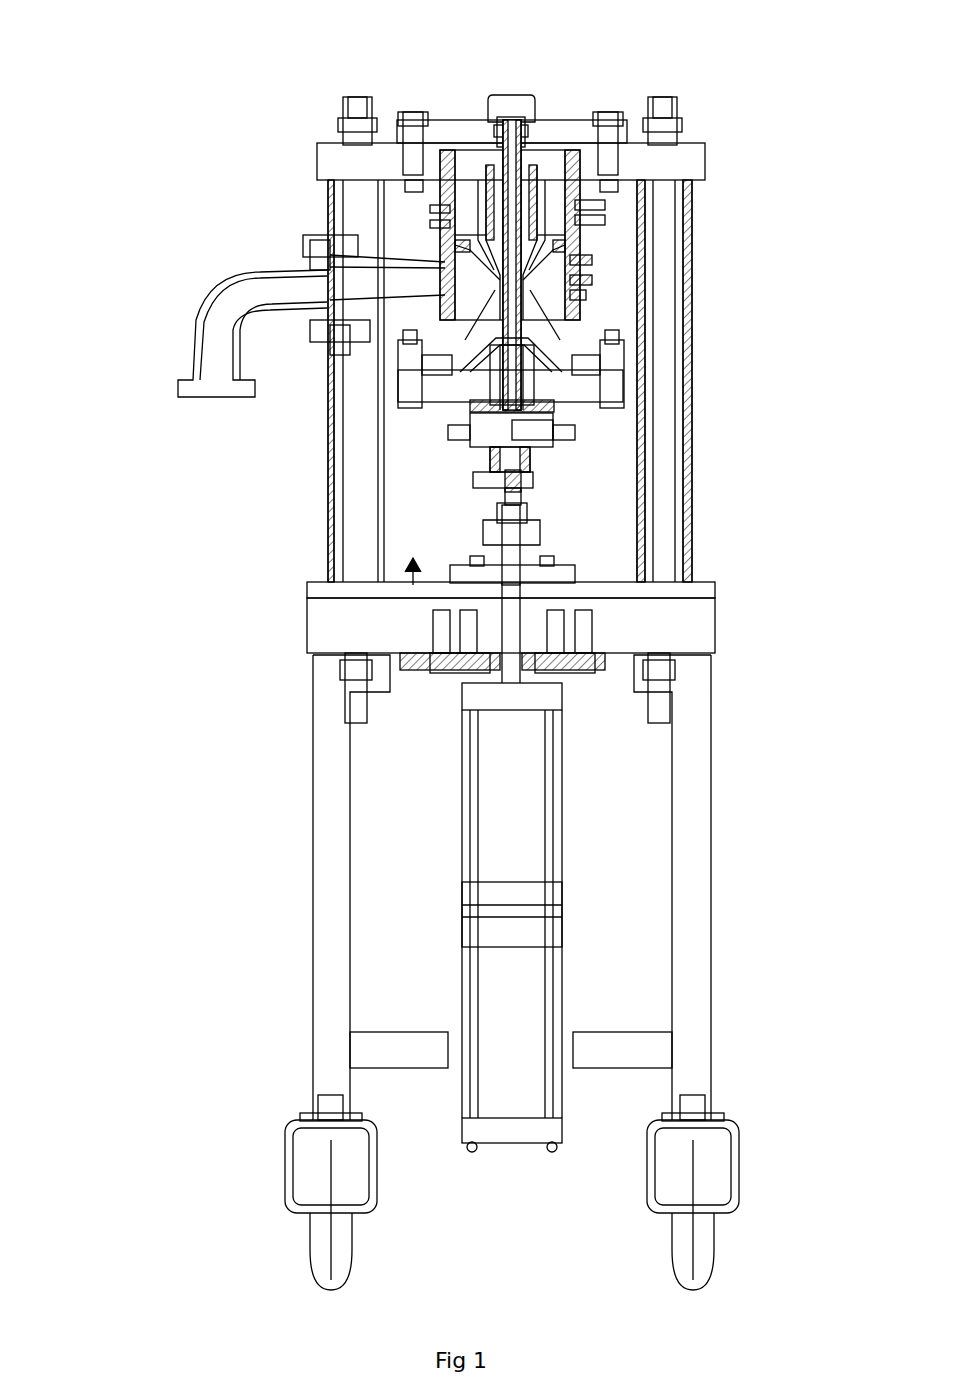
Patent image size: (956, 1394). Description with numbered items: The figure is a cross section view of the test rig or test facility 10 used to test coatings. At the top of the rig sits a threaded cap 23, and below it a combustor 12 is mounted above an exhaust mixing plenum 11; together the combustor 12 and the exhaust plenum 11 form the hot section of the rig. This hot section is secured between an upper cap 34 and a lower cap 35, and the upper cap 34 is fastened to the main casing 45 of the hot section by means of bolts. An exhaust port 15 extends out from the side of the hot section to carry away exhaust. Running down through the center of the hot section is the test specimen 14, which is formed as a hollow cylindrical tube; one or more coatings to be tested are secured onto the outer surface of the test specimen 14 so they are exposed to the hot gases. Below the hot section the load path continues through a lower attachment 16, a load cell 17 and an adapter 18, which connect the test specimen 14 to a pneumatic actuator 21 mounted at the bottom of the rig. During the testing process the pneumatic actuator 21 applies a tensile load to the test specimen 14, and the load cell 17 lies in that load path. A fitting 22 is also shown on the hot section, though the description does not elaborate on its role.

The test rig 10 is at (158, 158).
The exhaust mixing plenum 11 is at (553, 302).
The combustor 12 is at (528, 200).
The test specimen 14 is at (515, 323).
The exhaust port 15 is at (222, 312).
The lower attachment 16 is at (583, 431).
The load cell 17 is at (540, 476).
The adapter 18 is at (535, 521).
The pneumatic actuator 21 is at (515, 798).
The fitting 22 is at (585, 277).
The threaded cap 23 is at (508, 103).
The upper cap 34 is at (462, 130).
The lower cap 35 is at (587, 387).
The main casing 45 is at (712, 150).